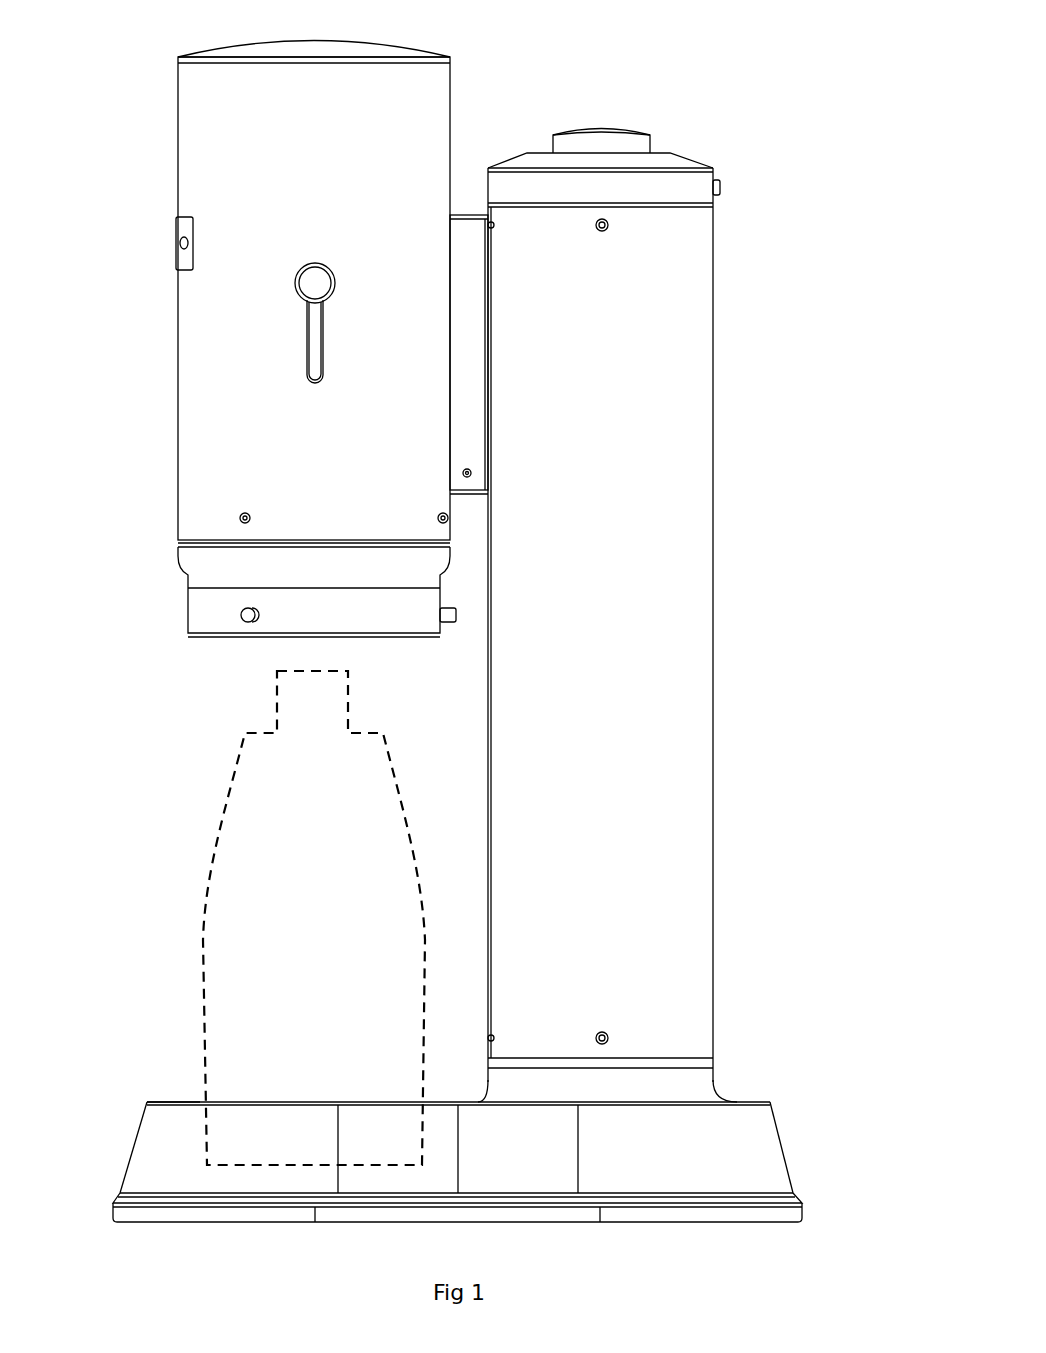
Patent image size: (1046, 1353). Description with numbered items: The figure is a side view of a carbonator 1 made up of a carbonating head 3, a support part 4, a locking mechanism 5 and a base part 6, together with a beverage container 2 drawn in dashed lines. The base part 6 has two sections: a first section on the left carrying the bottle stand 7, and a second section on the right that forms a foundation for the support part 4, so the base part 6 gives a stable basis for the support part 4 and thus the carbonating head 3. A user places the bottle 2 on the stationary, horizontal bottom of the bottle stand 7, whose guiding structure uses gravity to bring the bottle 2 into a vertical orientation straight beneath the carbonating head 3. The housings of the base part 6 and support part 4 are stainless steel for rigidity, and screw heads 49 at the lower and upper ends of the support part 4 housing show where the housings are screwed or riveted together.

The carbonator 1 is at (780, 28).
The beverage container 2 is at (285, 785).
The carbonating head 3 is at (210, 178).
The support part 4 is at (663, 670).
The locking mechanism 5 is at (98, 1090).
The base part 6 is at (705, 1150).
The bottle stand 7 is at (172, 1070).
The screw heads 49 is at (608, 226).